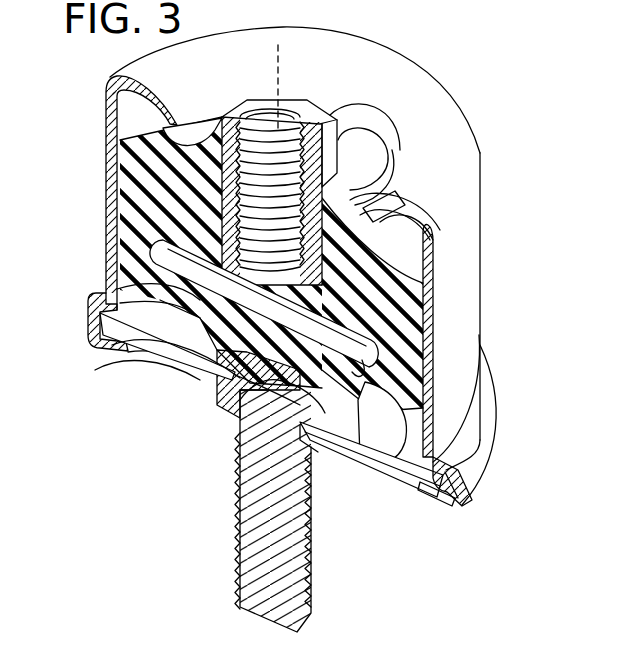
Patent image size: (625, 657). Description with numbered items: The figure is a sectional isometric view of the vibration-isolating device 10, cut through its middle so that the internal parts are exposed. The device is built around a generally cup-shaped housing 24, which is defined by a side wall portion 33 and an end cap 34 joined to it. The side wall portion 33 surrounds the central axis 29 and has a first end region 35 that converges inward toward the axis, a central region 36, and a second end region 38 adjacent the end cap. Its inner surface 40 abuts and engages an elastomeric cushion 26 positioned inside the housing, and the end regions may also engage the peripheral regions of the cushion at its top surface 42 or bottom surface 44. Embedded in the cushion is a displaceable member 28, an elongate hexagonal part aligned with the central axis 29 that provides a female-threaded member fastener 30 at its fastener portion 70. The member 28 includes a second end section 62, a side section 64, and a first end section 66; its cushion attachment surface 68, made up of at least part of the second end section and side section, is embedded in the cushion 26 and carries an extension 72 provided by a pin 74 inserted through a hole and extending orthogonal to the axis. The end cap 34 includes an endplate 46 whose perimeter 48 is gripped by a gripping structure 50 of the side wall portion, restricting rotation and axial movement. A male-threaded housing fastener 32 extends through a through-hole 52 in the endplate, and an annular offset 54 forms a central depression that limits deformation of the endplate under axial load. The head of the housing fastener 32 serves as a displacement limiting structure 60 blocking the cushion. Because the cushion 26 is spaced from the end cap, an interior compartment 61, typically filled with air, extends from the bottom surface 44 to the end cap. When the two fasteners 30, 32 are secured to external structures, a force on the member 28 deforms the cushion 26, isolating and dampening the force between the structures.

The vibration-isolating device 10 is at (97, 125).
The housing 24 is at (103, 277).
The elastomeric cushion 26 is at (125, 182).
The displaceable member 28 is at (220, 122).
The central axis 29 is at (270, 74).
The member fastener 30 is at (277, 116).
The housing fastener 32 is at (243, 543).
The side wall portion 33 is at (485, 310).
The end cap 34 is at (168, 397).
The first end region 35 is at (440, 113).
The central region 36 is at (466, 288).
The second end region 38 is at (498, 430).
The inner surface 40 is at (423, 350).
The top surface 42 is at (408, 224).
The bottom surface 44 is at (380, 400).
The endplate 46 is at (345, 465).
The perimeter 48 is at (447, 492).
The gripping structure 50 is at (452, 486).
The through-hole 52 is at (240, 410).
The offset 54 is at (412, 487).
The displacement limiting structure 60 is at (318, 450).
The interior compartment 61 is at (157, 343).
The second end section 62 is at (184, 372).
The side section 64 is at (385, 175).
The first end section 66 is at (330, 117).
The cushion attachment surface 68 is at (422, 257).
The fastener portion 70 is at (357, 146).
The extension 72 is at (355, 368).
The pin 74 is at (173, 363).